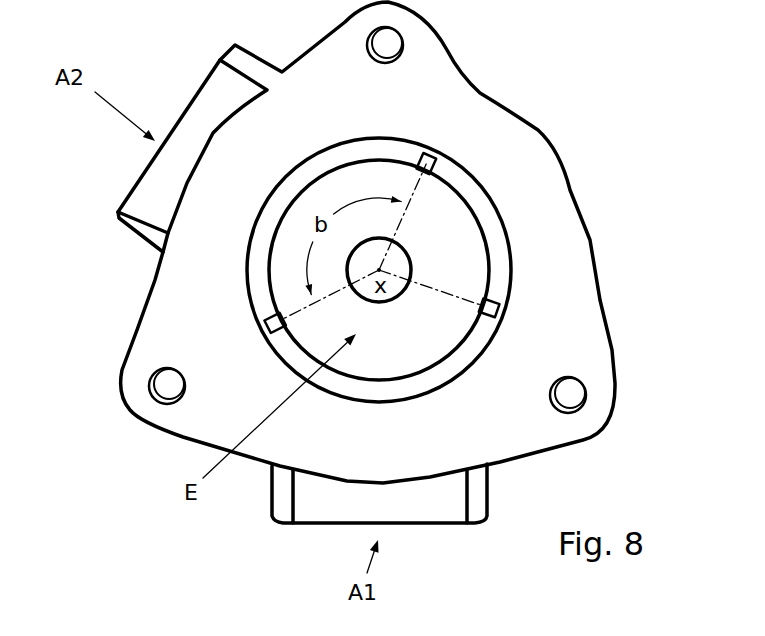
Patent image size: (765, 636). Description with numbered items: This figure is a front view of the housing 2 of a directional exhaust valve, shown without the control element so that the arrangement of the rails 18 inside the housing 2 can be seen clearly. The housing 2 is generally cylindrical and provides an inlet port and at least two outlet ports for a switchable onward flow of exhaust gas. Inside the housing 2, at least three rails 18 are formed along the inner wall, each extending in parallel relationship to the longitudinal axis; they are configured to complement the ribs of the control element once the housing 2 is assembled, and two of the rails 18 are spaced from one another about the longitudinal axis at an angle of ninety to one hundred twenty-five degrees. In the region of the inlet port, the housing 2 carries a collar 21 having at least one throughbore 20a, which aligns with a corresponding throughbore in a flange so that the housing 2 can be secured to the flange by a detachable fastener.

The housing 2 is at (630, 174).
The rail 18 is at (427, 168).
The throughbore 20a is at (393, 52).
The collar 21 is at (165, 323).